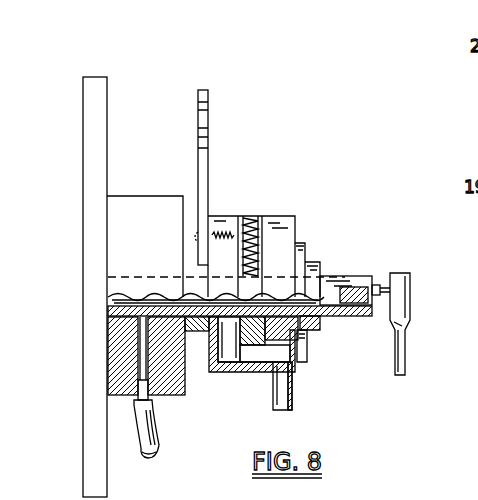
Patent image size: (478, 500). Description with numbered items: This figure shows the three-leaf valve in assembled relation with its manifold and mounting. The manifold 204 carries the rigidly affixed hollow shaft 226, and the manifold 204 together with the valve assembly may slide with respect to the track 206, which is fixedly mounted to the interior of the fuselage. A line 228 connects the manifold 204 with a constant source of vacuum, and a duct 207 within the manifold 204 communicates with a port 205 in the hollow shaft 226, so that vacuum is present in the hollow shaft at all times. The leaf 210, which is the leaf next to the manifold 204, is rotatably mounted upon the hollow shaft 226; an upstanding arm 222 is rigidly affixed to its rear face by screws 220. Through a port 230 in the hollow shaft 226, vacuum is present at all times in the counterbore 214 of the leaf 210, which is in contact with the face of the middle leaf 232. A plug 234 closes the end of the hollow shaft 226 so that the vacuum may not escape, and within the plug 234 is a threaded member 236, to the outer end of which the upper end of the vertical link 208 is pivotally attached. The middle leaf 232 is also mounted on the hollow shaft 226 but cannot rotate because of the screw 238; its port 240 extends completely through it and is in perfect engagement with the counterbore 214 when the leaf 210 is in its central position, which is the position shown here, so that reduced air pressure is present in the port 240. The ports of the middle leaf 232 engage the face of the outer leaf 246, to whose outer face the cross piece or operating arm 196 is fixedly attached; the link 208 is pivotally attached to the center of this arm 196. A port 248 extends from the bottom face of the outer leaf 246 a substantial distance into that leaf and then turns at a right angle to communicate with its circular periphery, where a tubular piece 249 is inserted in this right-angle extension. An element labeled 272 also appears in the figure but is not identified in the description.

The operating arm 196 is at (305, 256).
The manifold 204 is at (163, 381).
The port 205 is at (143, 311).
The track 206 is at (94, 122).
The duct 207 is at (112, 355).
The vertical link 208 is at (407, 357).
The leaf 210 is at (222, 236).
The counterbore 214 is at (228, 355).
The screws 220 is at (213, 230).
The upstanding arm 222 is at (208, 138).
The hollow shaft 226 is at (333, 307).
The line 228 is at (152, 451).
The port 230 is at (211, 360).
The middle leaf 232 is at (282, 238).
The plug 234 is at (356, 305).
The threaded member 236 is at (391, 278).
The screw 238 is at (251, 226).
The port 240 is at (252, 356).
The outer leaf 246 is at (296, 217).
The port 248 is at (275, 398).
The tubular piece 249 is at (292, 390).
The fluid level 272 is at (188, 300).